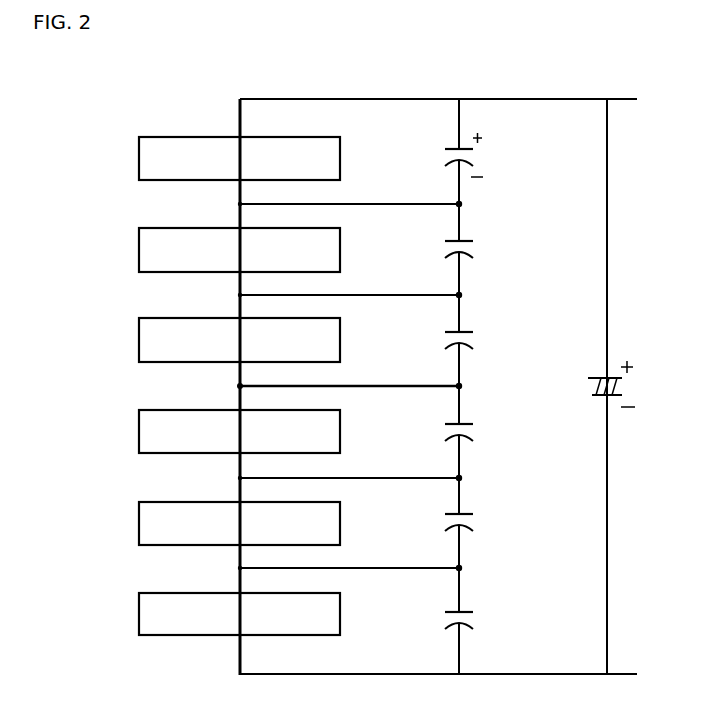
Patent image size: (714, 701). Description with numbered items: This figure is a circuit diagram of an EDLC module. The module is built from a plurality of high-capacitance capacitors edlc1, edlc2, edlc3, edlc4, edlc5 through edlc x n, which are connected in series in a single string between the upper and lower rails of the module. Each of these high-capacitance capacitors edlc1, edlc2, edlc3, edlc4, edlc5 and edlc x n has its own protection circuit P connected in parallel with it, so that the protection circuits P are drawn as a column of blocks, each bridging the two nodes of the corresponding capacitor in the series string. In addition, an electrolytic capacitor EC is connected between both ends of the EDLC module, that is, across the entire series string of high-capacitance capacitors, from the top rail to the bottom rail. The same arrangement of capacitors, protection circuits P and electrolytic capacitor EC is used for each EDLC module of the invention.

The protection circuit P is at (208, 386).
The high-capacitance capacitor edlc1 is at (484, 155).
The high-capacitance capacitor edlc2 is at (484, 249).
The high-capacitance capacitor edlc3 is at (484, 340).
The high-capacitance capacitor edlc4 is at (484, 432).
The high-capacitance capacitor edlc5 is at (484, 522).
The high-capacitance capacitor edlc x n is at (493, 617).
The electrolytic capacitor EC is at (629, 384).